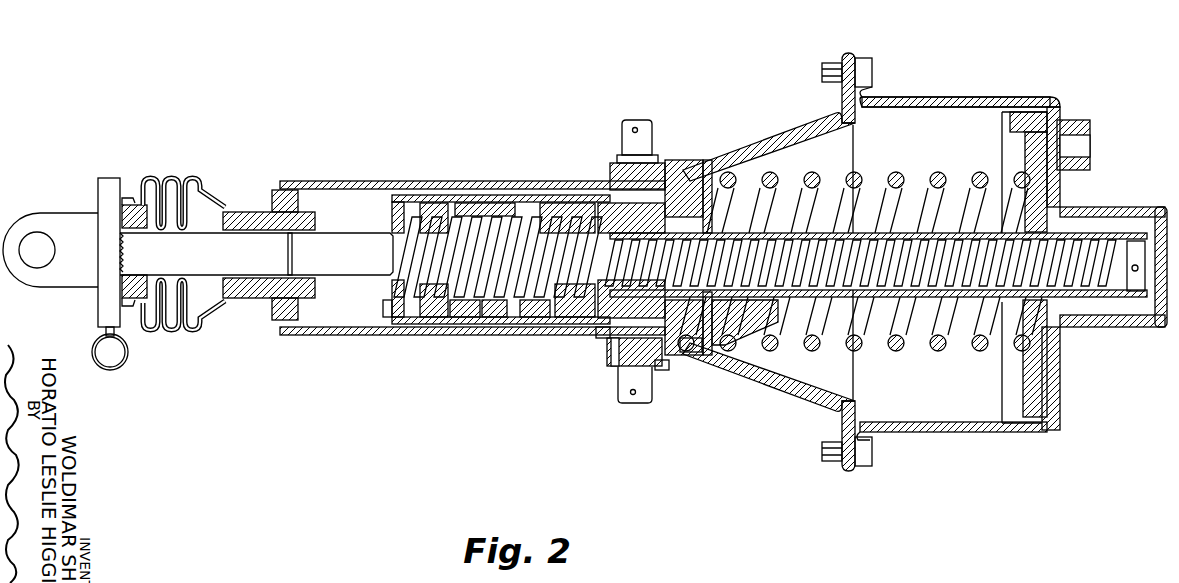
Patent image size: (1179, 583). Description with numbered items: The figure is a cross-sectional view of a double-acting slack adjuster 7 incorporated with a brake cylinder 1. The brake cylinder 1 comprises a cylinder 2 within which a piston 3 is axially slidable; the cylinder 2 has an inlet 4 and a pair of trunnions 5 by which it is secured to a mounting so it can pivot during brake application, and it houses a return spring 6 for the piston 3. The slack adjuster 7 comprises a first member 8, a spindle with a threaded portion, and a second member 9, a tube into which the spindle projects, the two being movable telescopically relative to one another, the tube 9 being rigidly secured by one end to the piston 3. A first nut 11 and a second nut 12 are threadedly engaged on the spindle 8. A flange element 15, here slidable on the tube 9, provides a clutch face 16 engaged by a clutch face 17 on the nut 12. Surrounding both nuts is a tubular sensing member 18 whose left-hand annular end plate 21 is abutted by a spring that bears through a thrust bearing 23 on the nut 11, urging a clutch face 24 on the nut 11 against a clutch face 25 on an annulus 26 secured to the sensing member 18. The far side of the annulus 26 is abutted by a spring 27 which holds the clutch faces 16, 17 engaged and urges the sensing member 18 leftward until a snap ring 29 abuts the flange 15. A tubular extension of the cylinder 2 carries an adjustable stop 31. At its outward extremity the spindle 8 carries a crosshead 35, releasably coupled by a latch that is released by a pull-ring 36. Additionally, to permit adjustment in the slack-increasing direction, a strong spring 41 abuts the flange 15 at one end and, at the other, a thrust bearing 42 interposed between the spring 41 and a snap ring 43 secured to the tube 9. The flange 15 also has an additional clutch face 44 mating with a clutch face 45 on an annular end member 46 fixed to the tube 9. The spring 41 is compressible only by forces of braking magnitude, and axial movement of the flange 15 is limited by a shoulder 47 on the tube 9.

The brake cylinder 1 is at (805, 112).
The cylinder 2 is at (735, 143).
The piston 3 is at (1053, 118).
The inlet 4 is at (1082, 145).
The trunnions 5 is at (622, 133).
The return spring 6 is at (895, 351).
The slack adjuster 7 is at (515, 180).
The first member 8 is at (525, 290).
The second member 9 is at (887, 233).
The first nut 11 is at (481, 190).
The second nut 12 is at (573, 188).
The flange element 15 is at (614, 340).
The clutch face 16 is at (585, 315).
The clutch face 17 is at (600, 340).
The tubular sensing member 18 is at (443, 215).
The annular end plate 21 is at (385, 308).
The thrust bearing 23 is at (437, 212).
The clutch face 24 is at (452, 305).
The clutch face 25 is at (472, 335).
The annulus 26 is at (488, 337).
The spring 27 is at (542, 335).
The snap ring 29 is at (645, 342).
The stop 31 is at (257, 303).
The crosshead 35 is at (33, 278).
The pull-ring 36 is at (130, 357).
The strong spring 41 is at (708, 192).
The thrust bearing 42 is at (720, 325).
The snap ring 43 is at (763, 322).
The clutch face 44 is at (662, 370).
The clutch face 45 is at (668, 215).
The annular end member 46 is at (605, 190).
The shoulder 47 is at (690, 352).